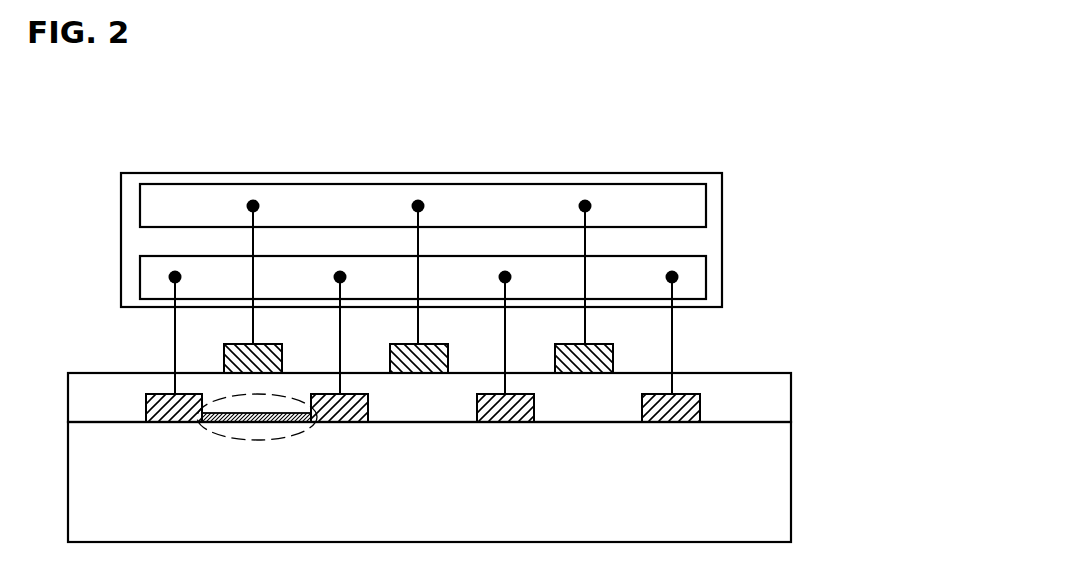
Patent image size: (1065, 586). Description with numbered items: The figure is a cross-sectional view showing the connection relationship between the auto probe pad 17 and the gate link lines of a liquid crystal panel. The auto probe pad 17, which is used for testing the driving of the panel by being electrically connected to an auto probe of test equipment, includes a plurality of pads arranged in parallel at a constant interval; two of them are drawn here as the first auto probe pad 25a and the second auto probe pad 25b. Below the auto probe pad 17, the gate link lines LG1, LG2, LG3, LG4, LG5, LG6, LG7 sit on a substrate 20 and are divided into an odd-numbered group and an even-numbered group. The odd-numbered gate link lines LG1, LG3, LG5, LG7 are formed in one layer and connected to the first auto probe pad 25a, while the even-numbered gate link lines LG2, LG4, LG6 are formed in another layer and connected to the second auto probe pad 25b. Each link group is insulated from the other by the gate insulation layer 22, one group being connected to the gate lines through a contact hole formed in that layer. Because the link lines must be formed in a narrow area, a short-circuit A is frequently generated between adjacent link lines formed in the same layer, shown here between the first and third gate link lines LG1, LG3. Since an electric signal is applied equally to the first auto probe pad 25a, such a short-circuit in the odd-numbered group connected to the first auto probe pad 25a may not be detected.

The auto probe pad 17 is at (668, 173).
The second auto probe pad 25b is at (700, 208).
The first auto probe pad 25a is at (700, 281).
The gate insulation layer 22 is at (787, 399).
The substrate 20 is at (782, 480).
The gate link line LG1 is at (174, 424).
The gate link line LG2 is at (261, 345).
The gate link line LG3 is at (339, 424).
The gate link line LG4 is at (428, 345).
The gate link line LG5 is at (505, 424).
The gate link line LG6 is at (593, 345).
The gate link line LG7 is at (671, 424).
The short-circuit A is at (257, 442).